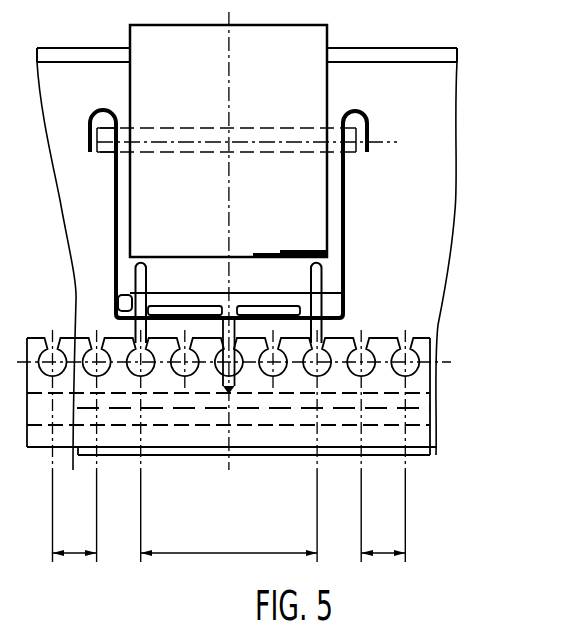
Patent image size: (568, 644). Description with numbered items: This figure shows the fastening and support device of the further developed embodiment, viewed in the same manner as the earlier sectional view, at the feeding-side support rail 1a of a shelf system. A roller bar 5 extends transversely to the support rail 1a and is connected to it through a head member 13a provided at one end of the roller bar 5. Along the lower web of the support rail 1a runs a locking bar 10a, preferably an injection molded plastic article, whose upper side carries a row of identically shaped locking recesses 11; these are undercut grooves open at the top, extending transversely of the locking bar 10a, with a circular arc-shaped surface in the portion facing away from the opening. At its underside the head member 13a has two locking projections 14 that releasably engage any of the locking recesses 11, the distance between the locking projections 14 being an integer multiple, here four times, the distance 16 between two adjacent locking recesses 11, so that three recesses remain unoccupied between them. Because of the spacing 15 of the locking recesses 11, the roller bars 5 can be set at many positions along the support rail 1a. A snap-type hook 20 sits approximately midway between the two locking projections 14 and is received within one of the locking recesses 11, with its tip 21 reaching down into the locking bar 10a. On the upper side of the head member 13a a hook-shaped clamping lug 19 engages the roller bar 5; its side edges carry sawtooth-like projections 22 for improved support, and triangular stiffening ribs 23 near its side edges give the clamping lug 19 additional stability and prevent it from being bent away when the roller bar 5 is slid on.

The support rail 1a is at (441, 110).
The roller bar 5 is at (314, 60).
The locking bar 10a is at (440, 410).
The locking recesses 11 is at (63, 358).
The head member 13a is at (290, 302).
The locking projections 14 is at (138, 372).
The spacing 15 is at (228, 540).
The distance 16 is at (74, 546).
The clamping lug 19 is at (185, 300).
The snap-type hook 20 is at (226, 383).
The pin tip 21 is at (232, 390).
The sawtooth-like projections 22 is at (120, 300).
The stiffening ribs 23 is at (133, 272).